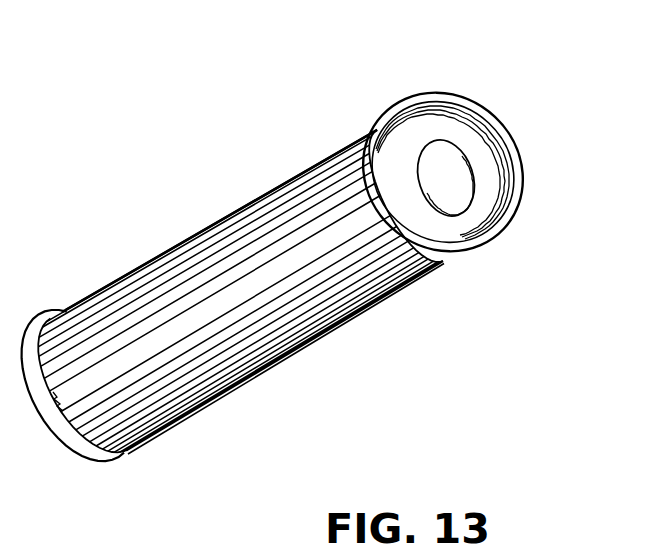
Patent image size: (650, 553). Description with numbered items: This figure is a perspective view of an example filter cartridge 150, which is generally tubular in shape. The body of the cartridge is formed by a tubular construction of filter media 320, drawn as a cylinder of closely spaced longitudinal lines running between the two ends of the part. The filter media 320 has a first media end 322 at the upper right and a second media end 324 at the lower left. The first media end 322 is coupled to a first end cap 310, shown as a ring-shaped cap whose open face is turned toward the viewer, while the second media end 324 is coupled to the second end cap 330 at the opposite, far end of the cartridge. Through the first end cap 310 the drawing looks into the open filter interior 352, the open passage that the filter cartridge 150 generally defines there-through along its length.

The filter cartridge 150 is at (164, 150).
The first end cap 310 is at (414, 110).
The filter media 320 is at (118, 298).
The first media end 322 is at (318, 118).
The second media end 324 is at (228, 432).
The second end cap 330 is at (55, 413).
The open filter interior 352 is at (447, 165).